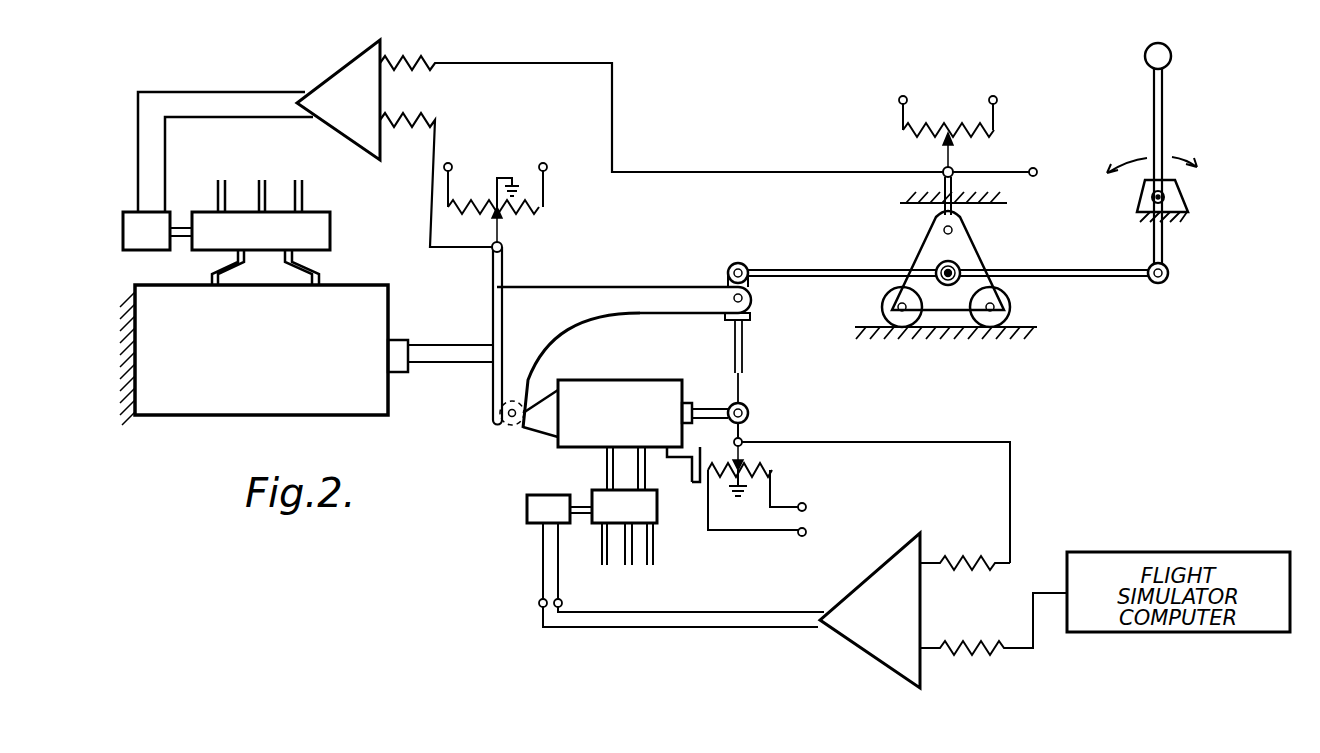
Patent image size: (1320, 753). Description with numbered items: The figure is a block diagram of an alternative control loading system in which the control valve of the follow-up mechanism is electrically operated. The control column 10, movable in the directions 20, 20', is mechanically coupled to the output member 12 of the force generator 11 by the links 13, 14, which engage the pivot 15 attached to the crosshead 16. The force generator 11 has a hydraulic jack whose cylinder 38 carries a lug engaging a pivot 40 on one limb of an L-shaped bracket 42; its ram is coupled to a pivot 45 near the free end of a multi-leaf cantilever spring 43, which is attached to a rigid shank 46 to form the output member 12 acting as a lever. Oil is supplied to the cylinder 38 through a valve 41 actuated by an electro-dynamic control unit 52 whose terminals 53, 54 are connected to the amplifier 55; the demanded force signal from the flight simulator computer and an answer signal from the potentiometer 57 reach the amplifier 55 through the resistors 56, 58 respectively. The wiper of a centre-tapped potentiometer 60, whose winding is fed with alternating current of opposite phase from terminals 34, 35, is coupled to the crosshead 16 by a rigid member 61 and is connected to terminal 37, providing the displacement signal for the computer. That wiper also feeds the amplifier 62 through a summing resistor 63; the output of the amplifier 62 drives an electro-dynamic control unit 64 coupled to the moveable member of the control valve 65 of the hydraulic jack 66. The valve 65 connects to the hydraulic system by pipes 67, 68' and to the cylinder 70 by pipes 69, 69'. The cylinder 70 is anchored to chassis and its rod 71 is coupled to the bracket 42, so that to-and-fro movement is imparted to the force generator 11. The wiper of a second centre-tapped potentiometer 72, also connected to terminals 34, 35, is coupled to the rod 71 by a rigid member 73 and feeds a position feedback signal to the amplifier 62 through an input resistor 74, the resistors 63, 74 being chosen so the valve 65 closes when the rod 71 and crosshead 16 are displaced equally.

The control column 10 is at (1152, 92).
The force generator 11 is at (650, 340).
The output member 12 is at (724, 273).
The link 13 is at (1096, 268).
The link 14 is at (844, 268).
The pivot 15 is at (960, 268).
The crosshead 16 is at (958, 326).
The stick movement direction 20 is at (1176, 181).
The stick movement direction 20' is at (1119, 157).
The terminal 34 is at (545, 162).
The terminal 35 is at (449, 162).
The terminal 37 is at (1036, 176).
The cylinder 38 is at (635, 422).
The pivot 40 is at (506, 416).
The valve 41 is at (643, 506).
The L-shaped bracket 42 is at (629, 286).
The multi-leaf cantilever spring 43 is at (744, 338).
The pivot 45 is at (746, 411).
The rigid shank 46 is at (724, 322).
The electro-dynamic control unit 52 is at (527, 508).
The terminal 53 is at (538, 602).
The terminal 54 is at (562, 601).
The amplifier 55 is at (890, 624).
The resistor 56 is at (986, 646).
The potentiometer 57 is at (770, 475).
The resistor 58 is at (968, 558).
The potentiometer 60 is at (995, 132).
The rigid member 61 is at (902, 190).
The amplifier 62 is at (350, 74).
The summing resistor 63 is at (664, 96).
The electro-dynamic control unit 64 is at (130, 212).
The control valve 65 is at (330, 218).
The hydraulic jack 66 is at (112, 295).
The pipe 67 is at (262, 178).
The pipe 68' is at (304, 177).
The pipe 69 is at (206, 213).
The pipe 69' is at (326, 267).
The cylinder 70 is at (272, 366).
The rod 71 is at (453, 366).
The potentiometer 72 is at (540, 208).
The rigid member 73 is at (503, 268).
The input resistor 74 is at (408, 118).